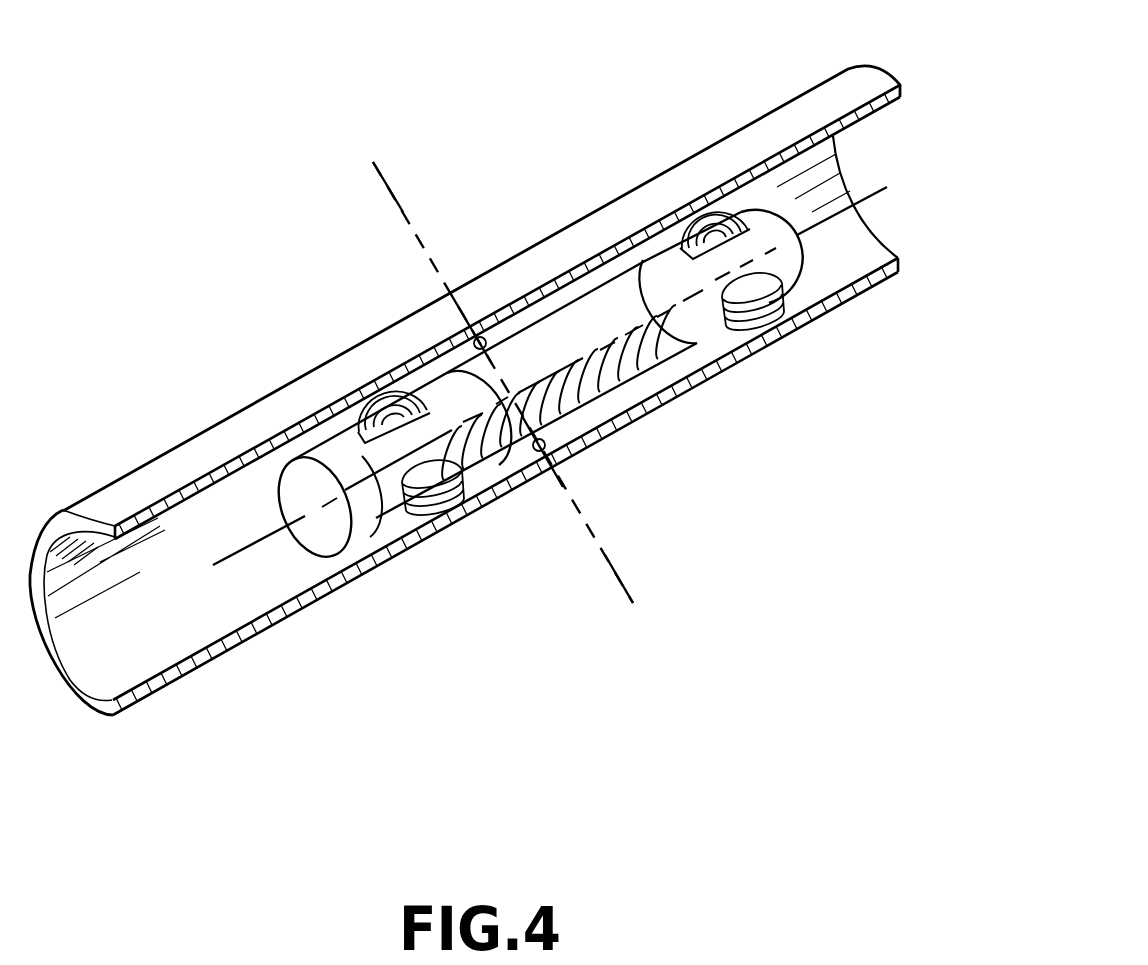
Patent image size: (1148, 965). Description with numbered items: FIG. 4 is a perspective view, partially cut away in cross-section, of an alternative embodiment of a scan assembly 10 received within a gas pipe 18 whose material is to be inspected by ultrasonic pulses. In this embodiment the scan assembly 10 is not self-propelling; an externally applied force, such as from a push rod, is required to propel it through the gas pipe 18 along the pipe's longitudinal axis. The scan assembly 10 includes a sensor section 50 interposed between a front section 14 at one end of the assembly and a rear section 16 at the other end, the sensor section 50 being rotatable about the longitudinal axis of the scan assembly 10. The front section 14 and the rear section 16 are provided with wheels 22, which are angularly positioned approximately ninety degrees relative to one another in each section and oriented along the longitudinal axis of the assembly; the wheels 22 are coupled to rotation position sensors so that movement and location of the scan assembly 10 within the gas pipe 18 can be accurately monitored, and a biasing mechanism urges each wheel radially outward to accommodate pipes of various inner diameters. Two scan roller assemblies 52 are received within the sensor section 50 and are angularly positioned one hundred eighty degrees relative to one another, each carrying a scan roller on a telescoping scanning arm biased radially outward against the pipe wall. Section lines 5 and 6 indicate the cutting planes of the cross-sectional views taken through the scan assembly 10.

The scan assembly 10 is at (566, 284).
The front section 14 is at (337, 450).
The rear section 16 is at (858, 212).
The gas pipe 18 is at (840, 302).
The wheels 22 is at (416, 368).
The sensor section 50 is at (640, 290).
The scan roller assembly 52 is at (488, 340).
The section line 5- 5 is at (690, 570).
The section line 6- 6 is at (848, 157).